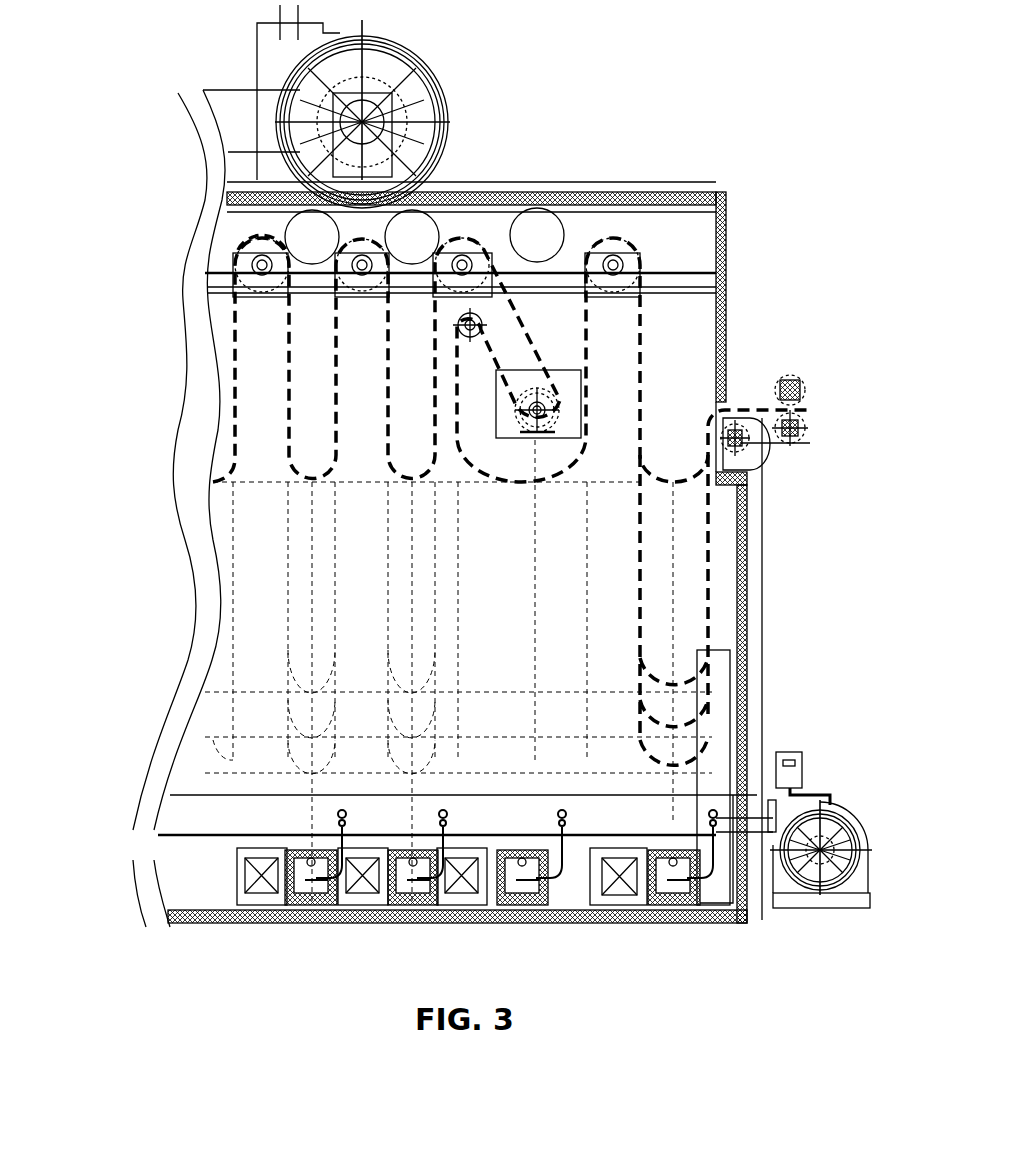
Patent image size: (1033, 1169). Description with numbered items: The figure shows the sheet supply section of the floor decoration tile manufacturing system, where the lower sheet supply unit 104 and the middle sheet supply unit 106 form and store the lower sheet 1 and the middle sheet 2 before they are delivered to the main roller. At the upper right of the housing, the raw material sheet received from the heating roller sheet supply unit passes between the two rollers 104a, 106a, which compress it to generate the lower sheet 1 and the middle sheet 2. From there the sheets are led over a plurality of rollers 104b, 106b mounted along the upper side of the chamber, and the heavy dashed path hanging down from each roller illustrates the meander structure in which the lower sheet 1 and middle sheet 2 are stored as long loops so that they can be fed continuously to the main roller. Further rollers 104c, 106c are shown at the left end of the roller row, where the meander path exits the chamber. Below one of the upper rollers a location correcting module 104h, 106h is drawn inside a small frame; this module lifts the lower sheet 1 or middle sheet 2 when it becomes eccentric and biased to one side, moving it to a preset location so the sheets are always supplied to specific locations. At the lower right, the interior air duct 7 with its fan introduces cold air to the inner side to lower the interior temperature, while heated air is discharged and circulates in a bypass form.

The lower sheet 1 is at (475, 466).
The middle sheet 2 is at (712, 578).
The interior air duct 7 is at (852, 832).
The lower sheet supply unit 104 is at (524, 454).
The middle sheet supply unit 106 is at (722, 198).
The rollers 104a is at (828, 386).
The rollers 106a is at (802, 382).
The rollers 104b is at (528, 211).
The rollers 106b is at (460, 243).
The first belt outlet roller 104c is at (162, 227).
The second belt outlet roller 106c is at (283, 230).
The location correcting module 104h is at (661, 339).
The location correcting module 106h is at (545, 402).